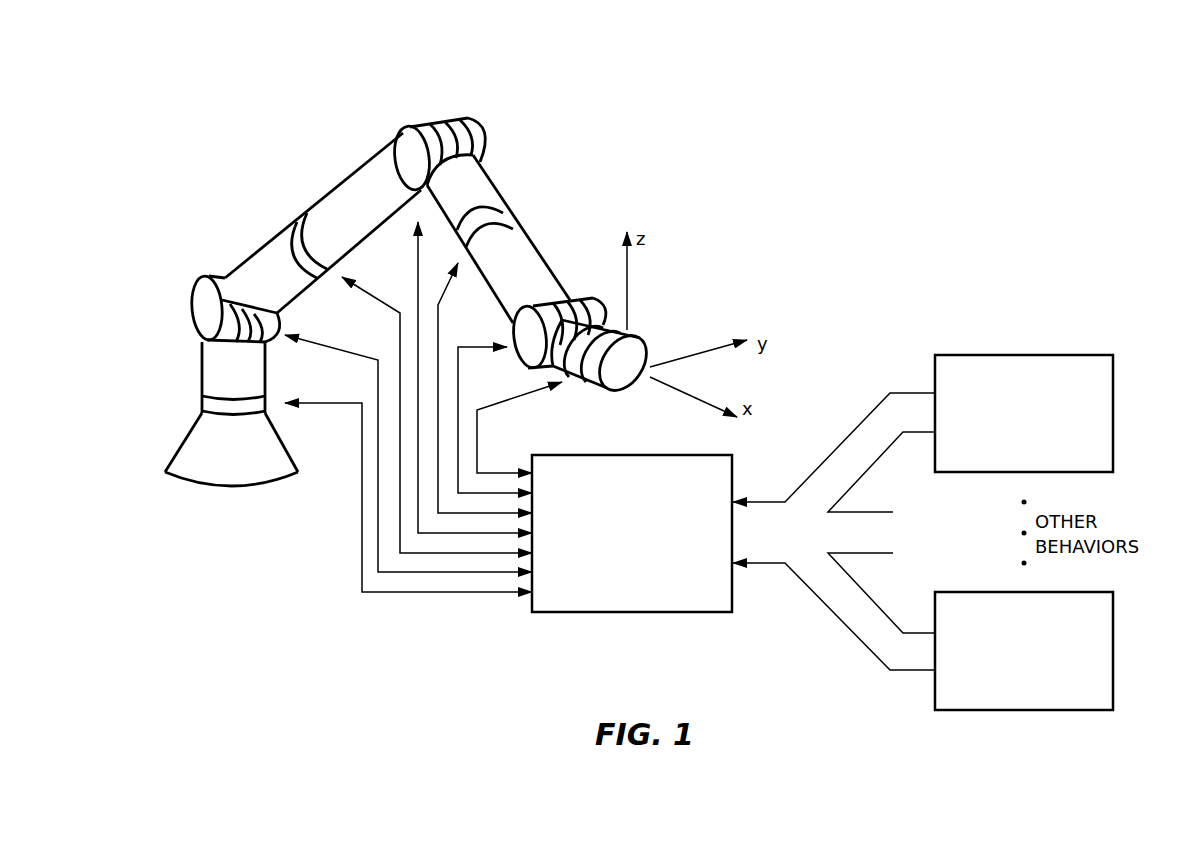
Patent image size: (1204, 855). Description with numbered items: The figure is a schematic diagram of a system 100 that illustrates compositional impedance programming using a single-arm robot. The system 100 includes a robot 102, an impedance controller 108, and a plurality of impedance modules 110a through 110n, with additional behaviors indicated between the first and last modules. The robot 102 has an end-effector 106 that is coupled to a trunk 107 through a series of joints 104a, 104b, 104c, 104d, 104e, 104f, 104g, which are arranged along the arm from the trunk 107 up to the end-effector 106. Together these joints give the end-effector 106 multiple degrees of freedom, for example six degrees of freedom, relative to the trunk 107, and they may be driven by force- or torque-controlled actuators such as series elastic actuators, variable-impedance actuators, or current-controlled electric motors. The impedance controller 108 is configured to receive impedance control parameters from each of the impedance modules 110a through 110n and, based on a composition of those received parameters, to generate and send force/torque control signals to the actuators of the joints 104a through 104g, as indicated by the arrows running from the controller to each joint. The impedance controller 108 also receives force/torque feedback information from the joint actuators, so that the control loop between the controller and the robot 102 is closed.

The system 100 is at (848, 120).
The robot 102 is at (248, 217).
The joint 104a is at (202, 403).
The joint 104b is at (208, 302).
The joint 104c is at (307, 235).
The joint 104d is at (415, 125).
The joint 104e is at (515, 205).
The joint 104f is at (537, 303).
The joint 104g is at (592, 335).
The end-effector 106 is at (643, 337).
The trunk 107 is at (200, 487).
The impedance controller 108 is at (632, 533).
The impedance module 110a is at (1024, 413).
The impedance module 110n is at (1024, 651).